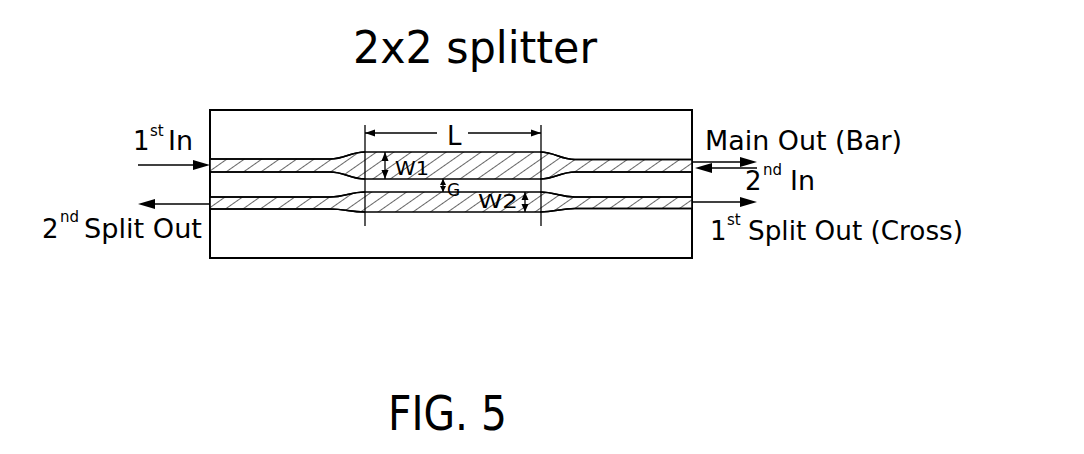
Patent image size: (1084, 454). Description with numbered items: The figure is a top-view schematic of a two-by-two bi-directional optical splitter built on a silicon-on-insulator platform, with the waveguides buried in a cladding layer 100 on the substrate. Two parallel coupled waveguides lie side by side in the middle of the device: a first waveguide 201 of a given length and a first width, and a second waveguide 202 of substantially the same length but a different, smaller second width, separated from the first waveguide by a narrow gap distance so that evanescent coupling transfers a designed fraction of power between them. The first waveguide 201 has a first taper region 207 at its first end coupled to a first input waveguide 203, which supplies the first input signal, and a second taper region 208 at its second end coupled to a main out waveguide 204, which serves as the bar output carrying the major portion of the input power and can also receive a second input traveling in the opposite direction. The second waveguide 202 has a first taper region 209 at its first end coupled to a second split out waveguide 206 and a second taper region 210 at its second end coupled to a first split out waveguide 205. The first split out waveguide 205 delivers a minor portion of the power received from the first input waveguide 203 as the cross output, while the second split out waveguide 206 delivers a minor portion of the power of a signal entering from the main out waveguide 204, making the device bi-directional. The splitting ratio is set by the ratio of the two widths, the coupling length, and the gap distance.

The cladding layer 100 is at (266, 253).
The first waveguide 201 is at (420, 152).
The second waveguide 202 is at (410, 208).
The first input waveguide 203 is at (265, 159).
The main out waveguide 204 is at (657, 160).
The first split out waveguide 205 is at (622, 209).
The second split out waveguide 206 is at (292, 209).
The first taper region 207 is at (352, 158).
The second taper region 208 is at (554, 157).
The first taper region 209 is at (345, 211).
The second taper region 210 is at (550, 211).